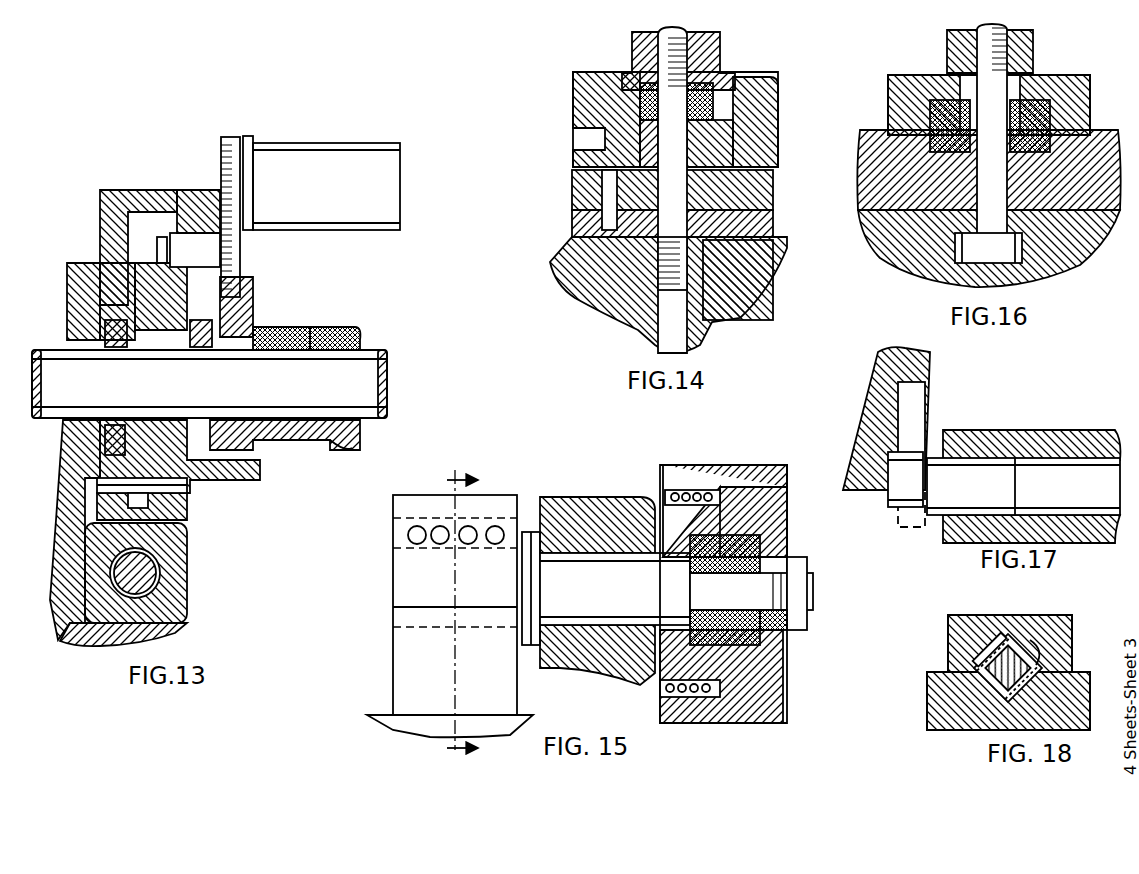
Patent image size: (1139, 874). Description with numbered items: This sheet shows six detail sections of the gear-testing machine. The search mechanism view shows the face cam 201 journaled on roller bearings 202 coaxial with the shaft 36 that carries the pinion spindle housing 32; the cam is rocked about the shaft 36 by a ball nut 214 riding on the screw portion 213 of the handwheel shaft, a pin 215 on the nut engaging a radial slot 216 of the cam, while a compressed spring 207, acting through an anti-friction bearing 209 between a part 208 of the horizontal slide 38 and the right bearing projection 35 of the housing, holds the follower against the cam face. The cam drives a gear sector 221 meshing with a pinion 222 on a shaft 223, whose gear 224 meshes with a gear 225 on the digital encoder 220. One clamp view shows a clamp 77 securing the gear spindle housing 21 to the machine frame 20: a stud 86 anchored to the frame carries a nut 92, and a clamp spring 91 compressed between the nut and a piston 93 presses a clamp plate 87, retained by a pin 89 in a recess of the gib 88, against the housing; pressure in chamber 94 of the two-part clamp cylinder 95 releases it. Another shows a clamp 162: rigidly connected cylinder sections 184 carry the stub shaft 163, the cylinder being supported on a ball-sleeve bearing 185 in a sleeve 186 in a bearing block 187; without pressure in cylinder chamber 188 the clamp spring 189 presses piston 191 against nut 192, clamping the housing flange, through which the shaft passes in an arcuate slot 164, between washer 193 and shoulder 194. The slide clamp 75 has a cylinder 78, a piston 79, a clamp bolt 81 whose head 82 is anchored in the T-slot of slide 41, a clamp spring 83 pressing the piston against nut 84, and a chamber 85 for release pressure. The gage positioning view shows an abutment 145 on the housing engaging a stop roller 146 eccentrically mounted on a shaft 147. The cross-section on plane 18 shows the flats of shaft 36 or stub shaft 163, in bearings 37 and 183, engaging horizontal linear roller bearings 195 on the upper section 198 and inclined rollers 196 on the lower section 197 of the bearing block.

In FIG. 15, the section plane 18— 18 is at (445, 614).
In FIG. 14, the machine frame 20 is at (592, 300).
In FIG. 14, the gear spindle housing 21 is at (760, 290).
In FIG. 17, the pinion spindle housing 32 is at (925, 352).
In FIG. 13, the right bearing projection 35 is at (350, 448).
In FIG. 13, the shaft 36 is at (254, 398).
In FIG. 18, the shaft 36 is at (1032, 660).
In FIG. 18, the bearings 37 is at (940, 668).
In FIG. 13, the horizontal slide 38 is at (100, 220).
In FIG. 16, the horizontal slide 38 is at (872, 186).
In FIG. 17, the horizontal slide 38 is at (1068, 432).
In FIG. 16, the slide 41 is at (922, 262).
In FIG. 16, the clamp 75 is at (1096, 128).
In FIG. 14, the clamp 77 is at (785, 128).
In FIG. 16, the cylinder 78 is at (910, 90).
In FIG. 16, the piston 79 is at (1030, 70).
In FIG. 16, the clamp bolt 81 is at (1002, 210).
In FIG. 16, the head 82 is at (1020, 246).
In FIG. 16, the clamp spring 83 is at (956, 152).
In FIG. 16, the nut 84 is at (956, 46).
In FIG. 16, the chamber 85 is at (1040, 112).
In FIG. 14, the stud 86 is at (662, 246).
In FIG. 14, the clamp plate 87 is at (590, 226).
In FIG. 14, the gib 88 is at (580, 204).
In FIG. 14, the pin 89 is at (606, 186).
In FIG. 14, the clamp spring 91 is at (642, 62).
In FIG. 14, the nut 92 is at (712, 46).
In FIG. 14, the piston 93 is at (630, 108).
In FIG. 14, the chamber 94 is at (724, 140).
In FIG. 14, the two-part clamp cylinder 95 is at (772, 80).
In FIG. 17, the abutment 145 is at (922, 400).
In FIG. 17, the stop roller 146 is at (900, 488).
In FIG. 17, the shaft 147 is at (983, 495).
In FIG. 15, the clamp 162 is at (758, 730).
In FIG. 15, the stub shaft 163 is at (613, 602).
In FIG. 15, the arcuate slot 164 is at (592, 480).
In FIG. 15, the bearings 183 is at (400, 640).
In FIG. 15, the cylinder sections 184 is at (700, 487).
In FIG. 15, the ball-sleeve bearing 185 is at (668, 497).
In FIG. 15, the sleeve 186 is at (662, 694).
In FIG. 15, the bearing block 187 is at (712, 712).
In FIG. 15, the cylinder chamber 188 is at (718, 550).
In FIG. 15, the clamp spring 189 is at (692, 578).
In FIG. 15, the piston 191 is at (778, 632).
In FIG. 15, the nut 192 is at (805, 615).
In FIG. 15, the washer 193 is at (655, 632).
In FIG. 15, the shoulder 194 is at (545, 545).
In FIG. 15, the linear roller bearings 195 is at (408, 528).
In FIG. 18, the linear roller bearings 195 is at (1003, 646).
In FIG. 18, the inclined rollers 196 is at (990, 688).
In FIG. 18, the lower section 197 is at (935, 708).
In FIG. 18, the upper section 198 is at (962, 642).
In FIG. 13, the face cam 201 is at (135, 286).
In FIG. 13, the roller bearings 202 is at (115, 348).
In FIG. 13, the compressed spring 207 is at (318, 347).
In FIG. 13, the part 208 is at (252, 308).
In FIG. 13, the anti-friction bearing 209 is at (343, 347).
In FIG. 13, the screw portion 213 is at (140, 575).
In FIG. 13, the ball nut 214 is at (168, 565).
In FIG. 13, the pin 215 is at (176, 487).
In FIG. 13, the radial slot 216 is at (150, 503).
In FIG. 13, the digital encoder 220 is at (337, 201).
In FIG. 13, the gear sector 221 is at (128, 262).
In FIG. 13, the pinion 222 is at (160, 240).
In FIG. 13, the shaft 223 is at (222, 262).
In FIG. 13, the gear 224 is at (232, 238).
In FIG. 13, the gear 225 is at (221, 168).